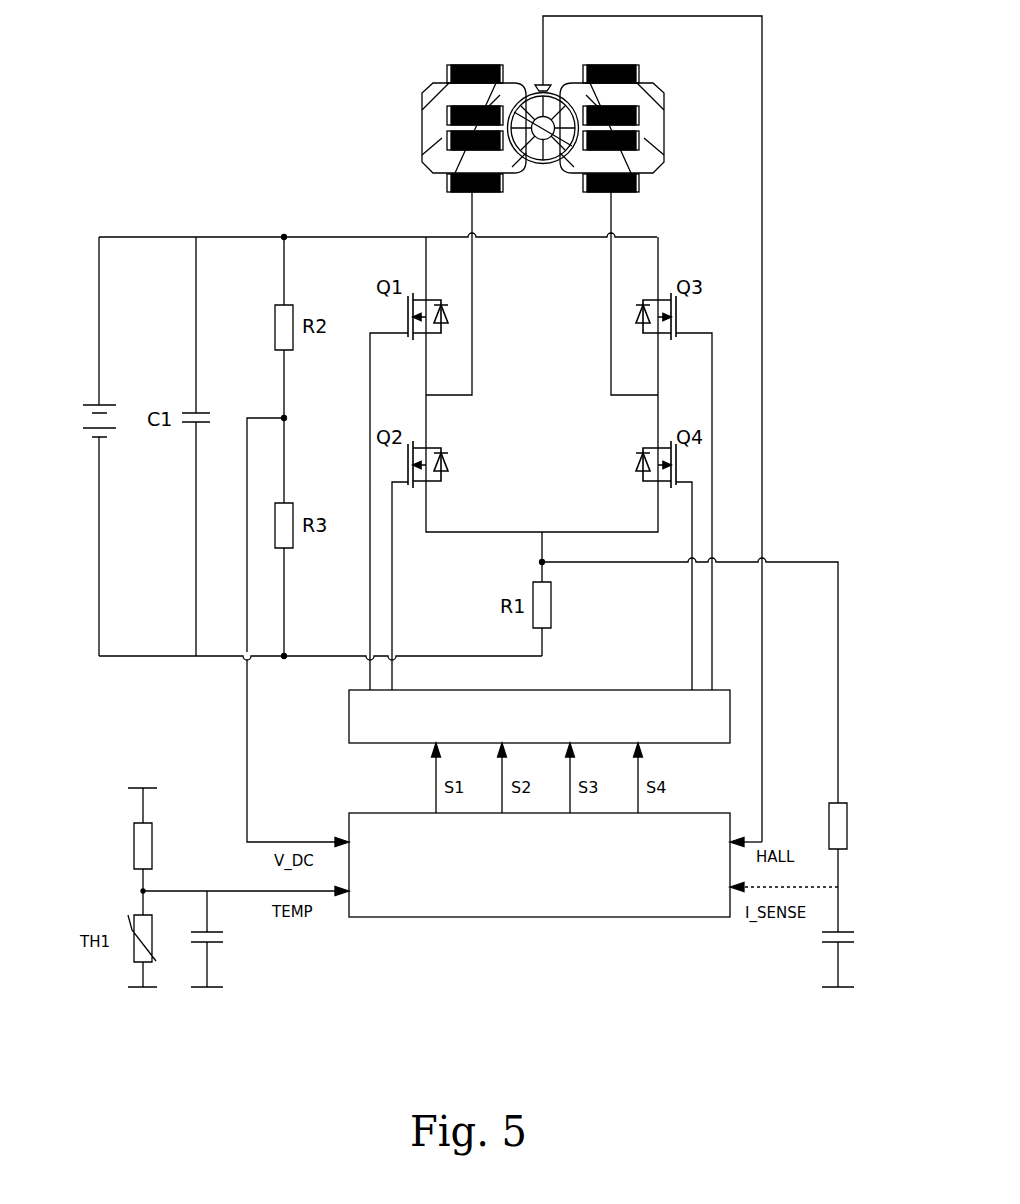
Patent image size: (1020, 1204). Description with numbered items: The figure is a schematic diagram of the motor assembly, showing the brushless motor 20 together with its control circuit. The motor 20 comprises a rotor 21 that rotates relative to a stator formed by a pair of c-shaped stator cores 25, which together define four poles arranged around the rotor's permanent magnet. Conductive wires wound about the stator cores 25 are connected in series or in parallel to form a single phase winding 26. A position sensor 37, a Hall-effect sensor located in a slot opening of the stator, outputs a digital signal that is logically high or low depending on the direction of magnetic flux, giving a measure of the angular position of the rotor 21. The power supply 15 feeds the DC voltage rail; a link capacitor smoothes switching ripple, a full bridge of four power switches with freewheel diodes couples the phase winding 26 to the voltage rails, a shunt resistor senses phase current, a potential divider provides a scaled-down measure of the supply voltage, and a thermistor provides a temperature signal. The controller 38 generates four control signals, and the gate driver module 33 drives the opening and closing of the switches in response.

The brushless motor 20 is at (416, 58).
The rotor 21 is at (545, 166).
The c-shaped stator cores 25 is at (421, 120).
The phase winding 26 is at (473, 63).
The position sensor 37 is at (539, 83).
The power supply 15 is at (80, 426).
The gate driver module 33 is at (349, 716).
The controller 38 is at (611, 919).